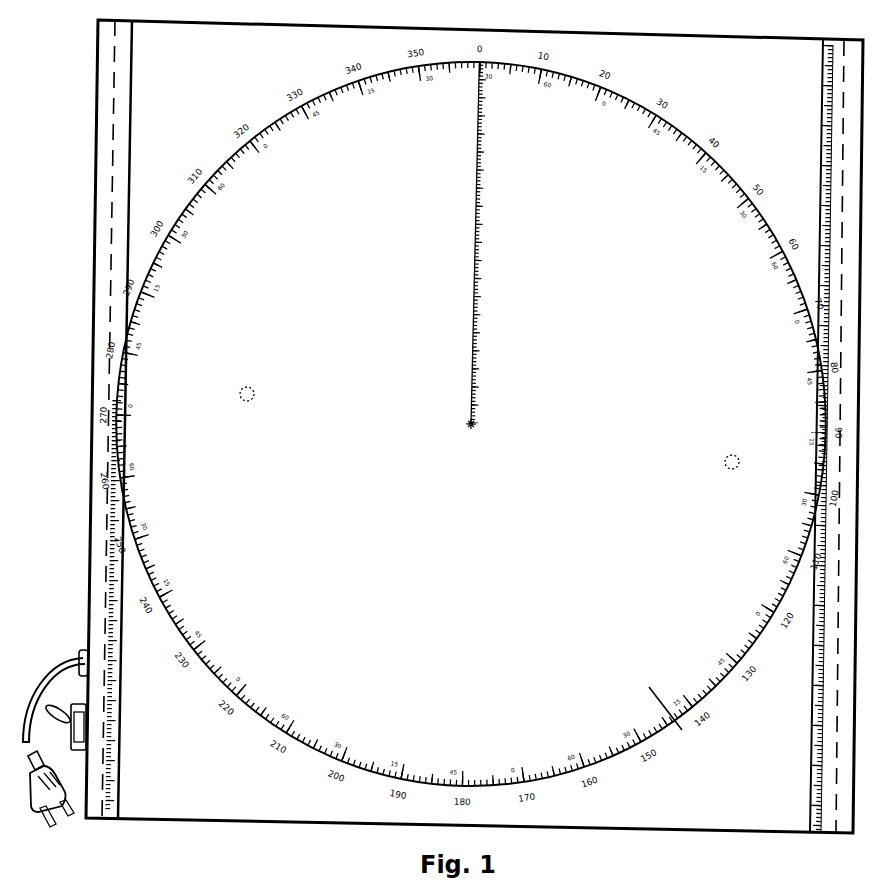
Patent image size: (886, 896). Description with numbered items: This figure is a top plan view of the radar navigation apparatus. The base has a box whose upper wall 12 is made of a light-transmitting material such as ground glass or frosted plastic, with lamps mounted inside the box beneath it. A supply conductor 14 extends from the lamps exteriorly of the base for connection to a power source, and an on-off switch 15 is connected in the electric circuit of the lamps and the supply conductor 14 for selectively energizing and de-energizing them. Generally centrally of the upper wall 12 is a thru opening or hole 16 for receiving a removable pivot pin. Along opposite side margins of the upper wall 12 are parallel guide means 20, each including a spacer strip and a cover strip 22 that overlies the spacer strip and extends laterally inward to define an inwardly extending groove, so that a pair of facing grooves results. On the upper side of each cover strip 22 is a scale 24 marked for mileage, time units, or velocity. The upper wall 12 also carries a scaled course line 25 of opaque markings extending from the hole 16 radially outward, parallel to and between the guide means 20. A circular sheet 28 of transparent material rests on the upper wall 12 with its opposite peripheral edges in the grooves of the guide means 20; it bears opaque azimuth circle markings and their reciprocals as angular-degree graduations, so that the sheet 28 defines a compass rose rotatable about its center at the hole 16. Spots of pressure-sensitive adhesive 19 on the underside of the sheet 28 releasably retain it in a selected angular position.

The upper wall 12 is at (709, 816).
The supply conductor 14 is at (60, 668).
The on-off switch 15 is at (74, 728).
The hole 16 is at (475, 428).
The spots of pressure-sensitive adhesive 19 is at (254, 390).
The guide means 20 is at (134, 52).
The cover strip 22 is at (115, 787).
The scale 24 is at (121, 652).
The course line 25 is at (473, 374).
The circular sheet 28 is at (682, 730).